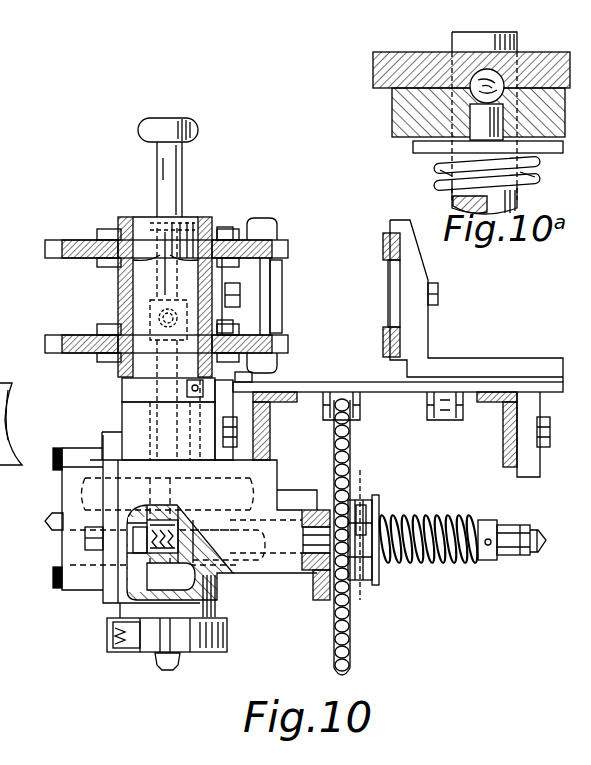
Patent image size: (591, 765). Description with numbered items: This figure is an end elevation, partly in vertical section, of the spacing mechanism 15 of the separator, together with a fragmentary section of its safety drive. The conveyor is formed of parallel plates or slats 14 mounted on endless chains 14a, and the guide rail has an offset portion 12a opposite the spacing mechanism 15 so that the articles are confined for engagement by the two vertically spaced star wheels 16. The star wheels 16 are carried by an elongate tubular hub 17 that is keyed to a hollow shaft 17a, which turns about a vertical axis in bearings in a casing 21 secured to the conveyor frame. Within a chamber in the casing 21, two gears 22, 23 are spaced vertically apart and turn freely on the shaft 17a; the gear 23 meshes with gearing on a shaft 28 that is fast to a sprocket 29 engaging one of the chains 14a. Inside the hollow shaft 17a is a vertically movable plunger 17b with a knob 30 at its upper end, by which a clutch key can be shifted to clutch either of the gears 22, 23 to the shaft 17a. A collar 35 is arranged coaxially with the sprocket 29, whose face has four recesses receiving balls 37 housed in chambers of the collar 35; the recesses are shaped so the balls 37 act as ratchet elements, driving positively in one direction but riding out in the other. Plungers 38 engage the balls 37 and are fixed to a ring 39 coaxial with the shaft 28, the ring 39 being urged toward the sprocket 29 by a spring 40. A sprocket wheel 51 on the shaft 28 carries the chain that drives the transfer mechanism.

In FIG. 10, the offset portion 12a is at (383, 236).
In FIG. 10, the plates or slats 14 is at (355, 376).
In FIG. 10, the endless chains 14a is at (430, 402).
In FIG. 10, the counting, dividing or spacing mechanism 15 is at (309, 212).
In FIG. 10, the star wheels 16 is at (62, 240).
In FIG. 10, the tubular hub 17 is at (205, 218).
In FIG. 10, the hollow shaft 17a is at (138, 287).
In FIG. 10, the plunger 17b is at (176, 193).
In FIG. 10, the casing 21 is at (122, 414).
In FIG. 10, the gear 22 is at (62, 492).
In FIG. 10, the gear 23 is at (235, 572).
In FIG. 10A, the shaft 28 is at (510, 198).
In FIG. 10, the sprocket 29 is at (352, 655).
In FIG. 10A, the sprocket 29 is at (393, 52).
In FIG. 10, the knob or handle 30 is at (180, 123).
In FIG. 10, the collar 35 is at (365, 500).
In FIG. 10A, the collar 35 is at (395, 100).
In FIG. 10, the balls 37 is at (362, 592).
In FIG. 10A, the balls 37 is at (482, 82).
In FIG. 10, the plungers 38 is at (380, 508).
In FIG. 10A, the plungers 38 is at (478, 120).
In FIG. 10, the ring 39 is at (381, 578).
In FIG. 10A, the ring 39 is at (413, 146).
In FIG. 10, the spring 40 is at (430, 520).
In FIG. 10A, the spring 40 is at (440, 162).
In FIG. 10, the sprocket wheel 51 is at (313, 588).